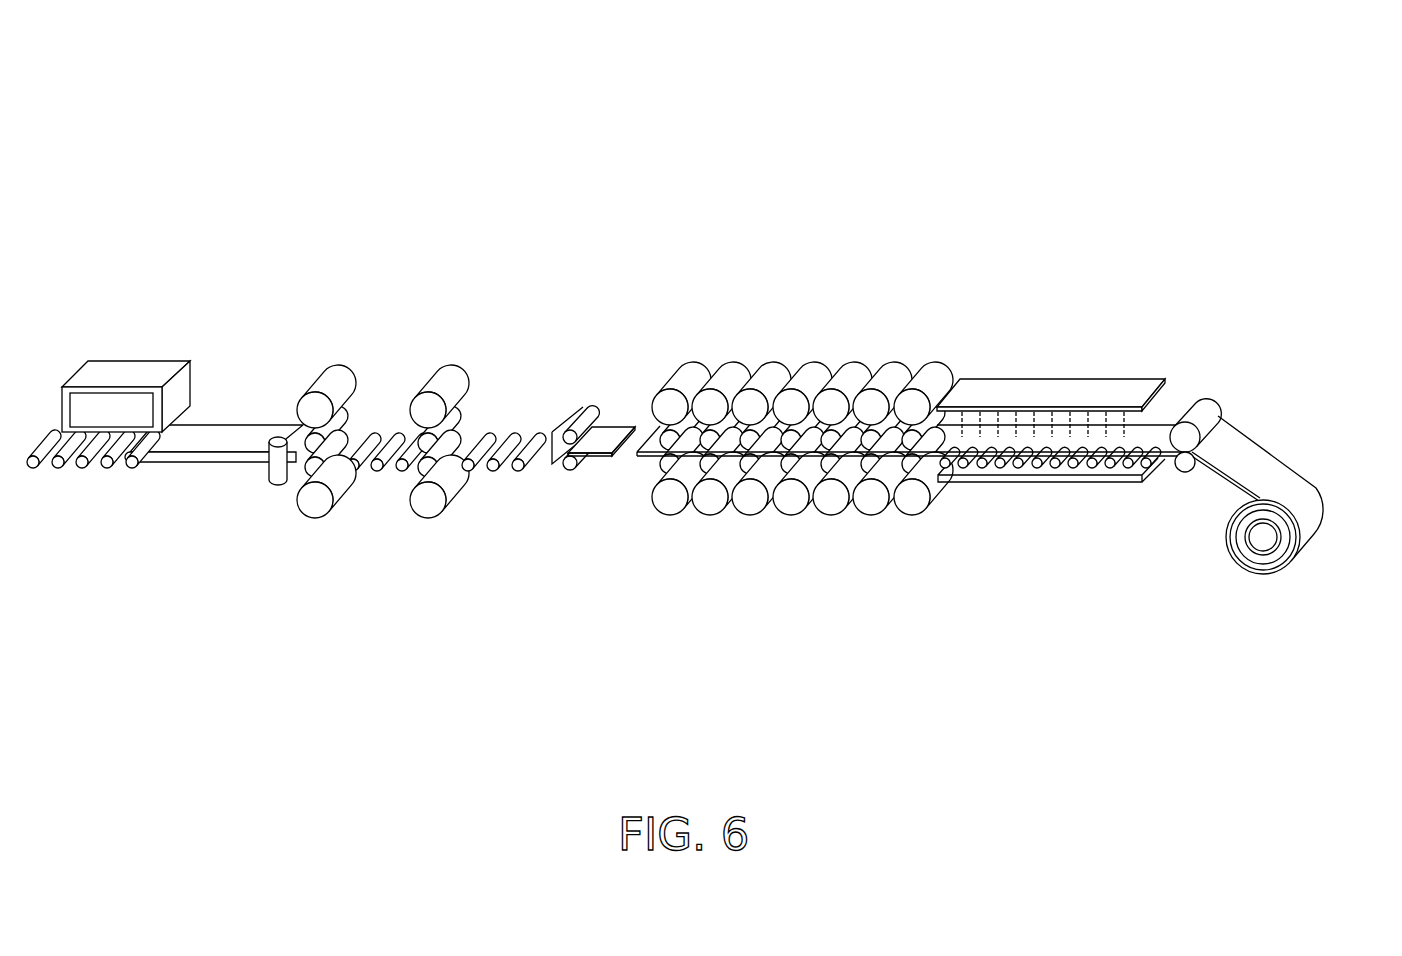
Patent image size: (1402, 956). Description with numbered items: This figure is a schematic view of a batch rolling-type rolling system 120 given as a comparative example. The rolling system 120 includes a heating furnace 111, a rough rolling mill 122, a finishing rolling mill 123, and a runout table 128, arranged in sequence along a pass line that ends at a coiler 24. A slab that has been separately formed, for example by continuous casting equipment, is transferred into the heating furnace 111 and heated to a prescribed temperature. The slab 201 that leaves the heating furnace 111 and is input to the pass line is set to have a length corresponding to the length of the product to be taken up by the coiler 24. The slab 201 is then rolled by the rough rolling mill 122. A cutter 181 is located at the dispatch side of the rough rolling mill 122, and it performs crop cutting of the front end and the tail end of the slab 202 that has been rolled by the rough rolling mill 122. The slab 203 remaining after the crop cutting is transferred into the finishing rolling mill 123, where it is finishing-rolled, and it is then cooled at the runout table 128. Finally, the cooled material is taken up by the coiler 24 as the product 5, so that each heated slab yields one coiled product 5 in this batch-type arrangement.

The rolling system 120 is at (1223, 219).
The heating furnace 111 is at (127, 358).
The slab 201 is at (248, 435).
The rough rolling mill 122 is at (330, 351).
The slab 202 is at (611, 432).
The cutter 181 is at (570, 470).
The finishing rolling mill 123 is at (690, 349).
The runout table 128 is at (1075, 393).
The slab 203 is at (1160, 428).
The product 5 is at (1317, 497).
The coiler 24 is at (1262, 542).